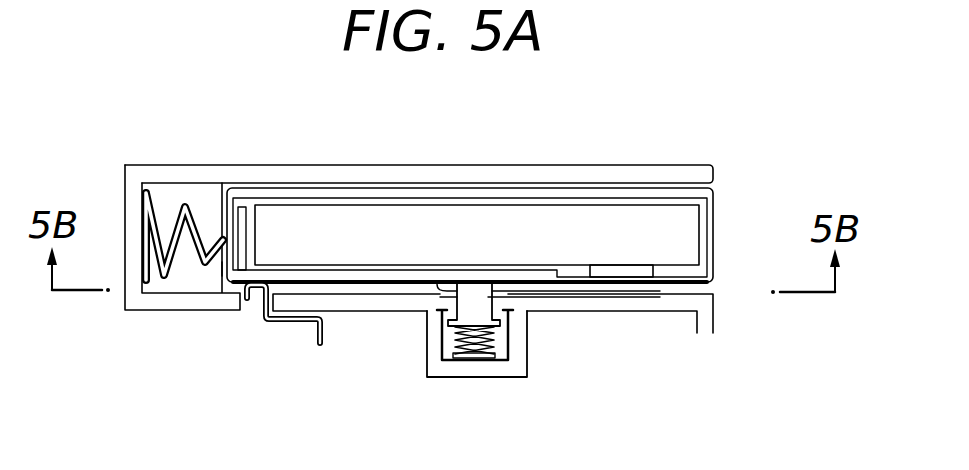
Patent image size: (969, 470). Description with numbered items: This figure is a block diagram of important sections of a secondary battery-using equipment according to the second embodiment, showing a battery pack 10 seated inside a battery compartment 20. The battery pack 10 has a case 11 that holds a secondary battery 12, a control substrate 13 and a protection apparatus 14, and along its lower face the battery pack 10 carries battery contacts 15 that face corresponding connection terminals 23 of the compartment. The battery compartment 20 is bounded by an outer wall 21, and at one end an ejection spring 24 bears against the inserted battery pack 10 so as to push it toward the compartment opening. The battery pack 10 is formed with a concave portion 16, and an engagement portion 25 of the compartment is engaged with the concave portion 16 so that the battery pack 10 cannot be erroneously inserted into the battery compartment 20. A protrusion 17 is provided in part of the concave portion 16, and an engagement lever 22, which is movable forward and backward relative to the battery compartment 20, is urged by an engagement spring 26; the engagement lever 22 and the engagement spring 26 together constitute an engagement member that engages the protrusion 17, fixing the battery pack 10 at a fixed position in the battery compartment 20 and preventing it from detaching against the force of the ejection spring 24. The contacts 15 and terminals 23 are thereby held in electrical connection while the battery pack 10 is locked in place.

The battery pack 10 is at (725, 219).
The case of the battery pack 11 is at (705, 283).
The secondary battery 12 is at (587, 226).
The control substrate 13 is at (240, 205).
The protection apparatus 14 is at (632, 272).
The contact point 15 is at (222, 270).
The concave portion 16 is at (380, 283).
The protrusion 17 is at (447, 282).
The battery compartment 20 is at (714, 156).
The outer wall of the battery compartment 21 is at (346, 172).
The engagement lever 22 is at (527, 313).
The hook bracket 23 is at (270, 318).
The ejection spring 24 is at (177, 217).
The engagement portion 25 is at (478, 300).
The engagement spring 26 is at (487, 357).